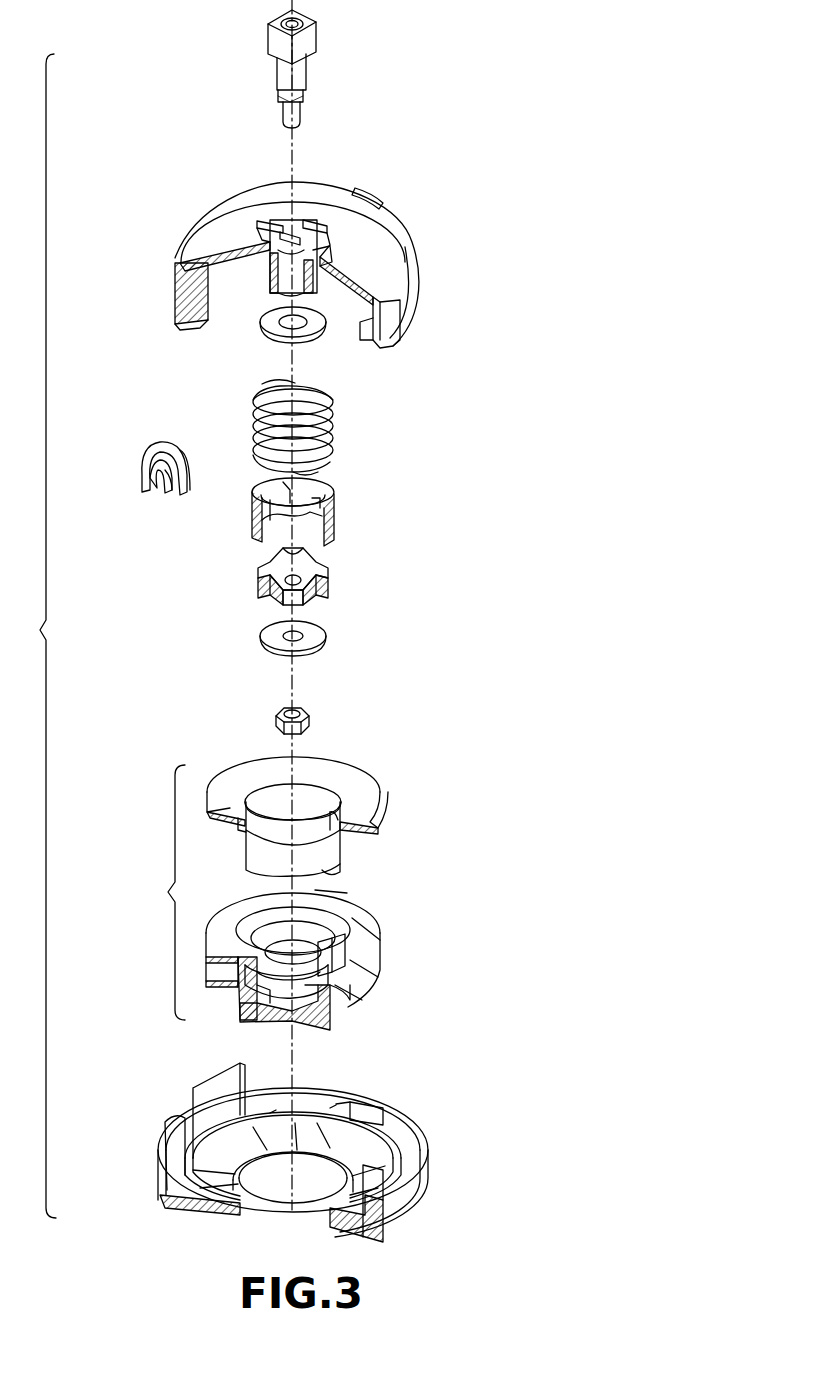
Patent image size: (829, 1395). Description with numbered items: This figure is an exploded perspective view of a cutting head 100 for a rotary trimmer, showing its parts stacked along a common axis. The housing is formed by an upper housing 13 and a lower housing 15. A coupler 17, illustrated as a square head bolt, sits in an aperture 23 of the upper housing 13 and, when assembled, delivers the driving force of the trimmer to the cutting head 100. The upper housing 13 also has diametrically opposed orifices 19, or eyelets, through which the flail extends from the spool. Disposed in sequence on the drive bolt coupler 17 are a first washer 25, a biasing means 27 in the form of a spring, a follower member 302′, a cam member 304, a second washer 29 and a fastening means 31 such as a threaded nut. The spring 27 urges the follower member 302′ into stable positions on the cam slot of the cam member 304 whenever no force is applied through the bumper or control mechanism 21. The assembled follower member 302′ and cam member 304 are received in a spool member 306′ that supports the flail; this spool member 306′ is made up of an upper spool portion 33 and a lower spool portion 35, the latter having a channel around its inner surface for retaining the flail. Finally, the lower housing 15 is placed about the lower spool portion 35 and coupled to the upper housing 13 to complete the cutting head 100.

The cutting head 100 is at (126, 250).
The coupler 17 is at (318, 36).
The upper housing 13 is at (410, 226).
The aperture 23 is at (330, 230).
The first washer 25 is at (262, 332).
The biasing means 27 is at (335, 426).
The orifices 19 is at (145, 485).
The follower member 302′ is at (335, 492).
The cam member 304 is at (330, 574).
The second washer 29 is at (262, 636).
The fastening means 31 is at (310, 720).
The spool member 306′ is at (148, 892).
The upper spool portion 33 is at (375, 785).
The lower spool portion 35 is at (380, 924).
The bumper or control mechanism 21 is at (340, 1022).
The lower housing 15 is at (415, 1132).